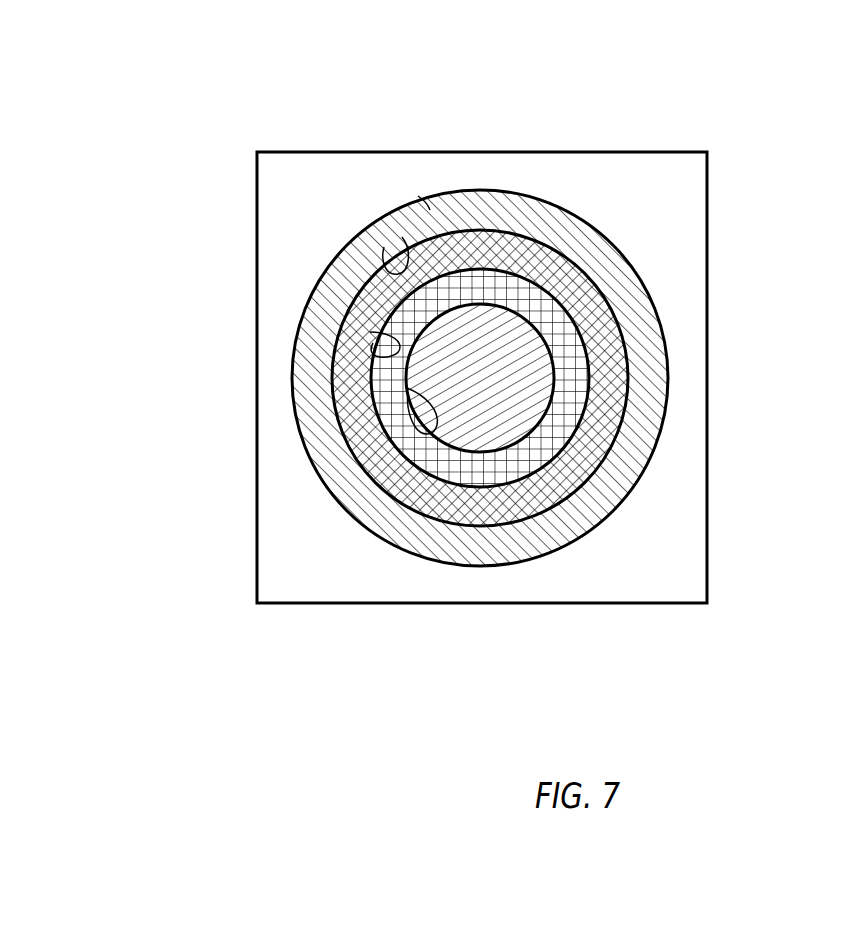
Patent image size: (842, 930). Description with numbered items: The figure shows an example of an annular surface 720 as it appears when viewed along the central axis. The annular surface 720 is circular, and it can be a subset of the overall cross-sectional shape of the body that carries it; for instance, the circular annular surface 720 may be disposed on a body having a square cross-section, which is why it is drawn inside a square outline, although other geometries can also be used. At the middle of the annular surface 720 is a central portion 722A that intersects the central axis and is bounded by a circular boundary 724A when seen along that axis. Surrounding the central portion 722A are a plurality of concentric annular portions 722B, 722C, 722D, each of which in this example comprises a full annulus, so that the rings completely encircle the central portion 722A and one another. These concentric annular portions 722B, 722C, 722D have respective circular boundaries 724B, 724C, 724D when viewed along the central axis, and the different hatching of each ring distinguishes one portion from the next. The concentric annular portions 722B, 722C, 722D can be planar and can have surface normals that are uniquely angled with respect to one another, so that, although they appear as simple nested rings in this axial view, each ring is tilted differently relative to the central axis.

The annular surface 720 is at (481, 152).
The central portion 722A is at (487, 433).
The concentric annular portion 722B is at (565, 420).
The concentric annular portion 722C is at (608, 368).
The concentric annular portion 722D is at (630, 325).
The circular boundary 724A is at (407, 388).
The circular boundary 724B is at (370, 332).
The circular boundary 724C is at (402, 237).
The circular boundary 724D is at (425, 205).